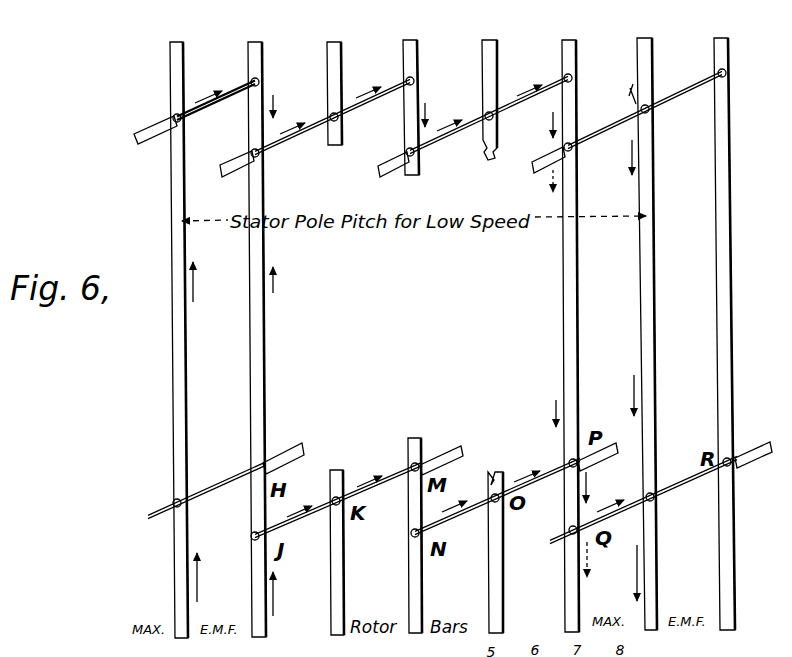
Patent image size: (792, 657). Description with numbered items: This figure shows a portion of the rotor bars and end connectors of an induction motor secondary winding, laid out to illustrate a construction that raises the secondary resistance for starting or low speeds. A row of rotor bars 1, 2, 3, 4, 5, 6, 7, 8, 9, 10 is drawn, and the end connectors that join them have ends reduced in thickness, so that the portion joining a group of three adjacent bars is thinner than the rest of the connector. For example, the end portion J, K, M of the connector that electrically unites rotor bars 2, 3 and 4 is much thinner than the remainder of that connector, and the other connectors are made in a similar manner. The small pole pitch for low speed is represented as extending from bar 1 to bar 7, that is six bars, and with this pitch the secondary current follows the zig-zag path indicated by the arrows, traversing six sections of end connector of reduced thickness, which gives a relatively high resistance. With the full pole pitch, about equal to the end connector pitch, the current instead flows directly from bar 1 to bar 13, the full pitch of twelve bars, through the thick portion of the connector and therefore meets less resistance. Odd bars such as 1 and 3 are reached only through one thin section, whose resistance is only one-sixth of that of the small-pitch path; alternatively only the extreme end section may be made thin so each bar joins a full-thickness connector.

The rotor bar 1 is at (179, 329).
The rotor bar 2 is at (257, 328).
The rotor bar 3 is at (335, 327).
The rotor bar 4 is at (412, 326).
The rotor bar 5 is at (492, 326).
The rotor bar 6 is at (570, 326).
The rotor bar 7 is at (647, 325).
The rotor bar 8 is at (724, 325).
The rotor bar 9 is at (662, 649).
The rotor bar 10 is at (710, 650).
The rotor bar 13 is at (757, 245).